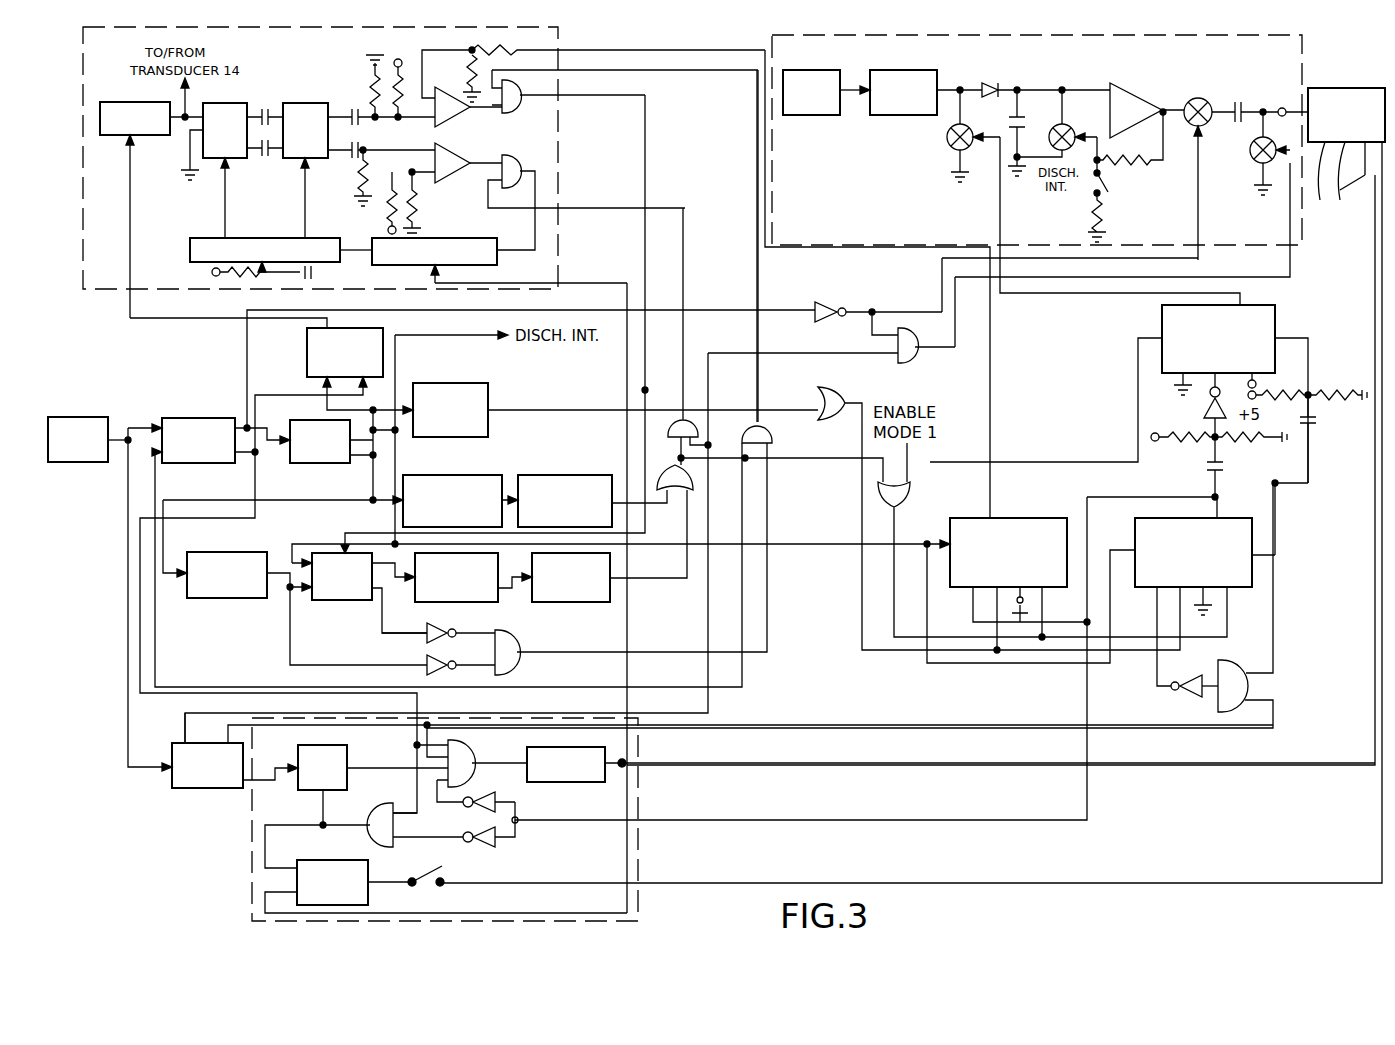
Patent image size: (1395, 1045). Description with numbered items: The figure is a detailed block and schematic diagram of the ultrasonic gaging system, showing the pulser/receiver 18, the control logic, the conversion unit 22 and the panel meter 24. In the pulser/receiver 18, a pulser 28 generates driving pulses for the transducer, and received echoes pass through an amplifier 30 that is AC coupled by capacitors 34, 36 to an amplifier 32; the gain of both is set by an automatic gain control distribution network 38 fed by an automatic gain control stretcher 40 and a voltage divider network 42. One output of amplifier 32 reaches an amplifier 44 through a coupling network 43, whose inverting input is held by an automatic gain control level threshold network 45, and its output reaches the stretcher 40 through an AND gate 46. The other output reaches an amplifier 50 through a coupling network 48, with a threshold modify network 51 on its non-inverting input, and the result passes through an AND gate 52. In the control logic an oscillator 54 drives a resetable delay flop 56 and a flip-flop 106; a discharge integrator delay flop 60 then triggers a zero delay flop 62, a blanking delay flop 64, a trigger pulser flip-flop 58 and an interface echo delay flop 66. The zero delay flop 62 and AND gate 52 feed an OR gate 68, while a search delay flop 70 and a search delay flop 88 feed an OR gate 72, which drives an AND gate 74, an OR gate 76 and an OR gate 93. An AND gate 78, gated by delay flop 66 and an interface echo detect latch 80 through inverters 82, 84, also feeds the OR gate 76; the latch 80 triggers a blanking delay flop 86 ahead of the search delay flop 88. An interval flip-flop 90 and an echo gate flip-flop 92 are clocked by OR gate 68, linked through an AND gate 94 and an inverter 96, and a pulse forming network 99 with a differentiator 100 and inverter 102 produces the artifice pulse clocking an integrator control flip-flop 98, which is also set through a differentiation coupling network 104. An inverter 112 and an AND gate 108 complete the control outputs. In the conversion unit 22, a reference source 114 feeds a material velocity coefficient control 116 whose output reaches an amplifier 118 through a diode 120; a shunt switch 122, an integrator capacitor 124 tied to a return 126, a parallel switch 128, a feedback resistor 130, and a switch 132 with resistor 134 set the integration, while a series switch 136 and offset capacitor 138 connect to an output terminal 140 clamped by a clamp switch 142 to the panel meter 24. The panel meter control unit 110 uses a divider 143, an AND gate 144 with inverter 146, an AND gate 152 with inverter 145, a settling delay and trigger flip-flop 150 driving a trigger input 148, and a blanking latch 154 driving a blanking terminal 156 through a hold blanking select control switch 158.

The pulser/receiver 18 is at (84, 208).
The conversion unit 22 is at (803, 240).
The panel meter 24 is at (1367, 85).
The pulser 28 is at (140, 100).
The amplifier 30 is at (208, 103).
The amplifier 32 is at (325, 105).
The capacitor 34 is at (268, 106).
The capacitor 36 is at (249, 158).
The automatic gain control distribution network 38 is at (277, 227).
The automatic gain control stretcher 40 is at (482, 238).
The voltage divider network 42 is at (270, 277).
The coupling network 43 is at (352, 178).
The amplifier 44 is at (465, 154).
The automatic gain control level threshold network 45 is at (428, 203).
The AND gate 46 is at (522, 165).
The coupling network 48 is at (358, 80).
The amplifier 50 is at (458, 90).
The threshold modify network 51 is at (500, 64).
The AND gate 52 is at (519, 95).
The oscillator 54 is at (88, 417).
The resetable delay flop 56 is at (206, 417).
The trigger pulser flip-flop 58 is at (305, 364).
The discharge integrator delay flop 60 is at (343, 465).
The zero delay flop 62 is at (465, 384).
The blanking delay flop 64 is at (474, 474).
The interface echo delay flop 66 is at (209, 598).
The OR gate 68 is at (836, 399).
The search delay flop 70 is at (559, 474).
The OR gate 72 is at (655, 478).
The AND gate 74 is at (668, 430).
The OR gate 76 is at (775, 440).
The AND gate 78 is at (517, 635).
The interface echo detect latch 80 is at (363, 603).
The inverter 82 is at (413, 665).
The inverter 84 is at (423, 630).
The blanking delay flop 86 is at (453, 604).
The search delay flop 88 is at (564, 604).
The interval flip-flop 90 is at (1070, 525).
The echo gate flip-flop 92 is at (1260, 553).
The OR gate 93 is at (883, 504).
The AND gate 94 is at (1218, 705).
The inverter 96 is at (1178, 683).
The integrator control flip-flop 98 is at (1162, 347).
The pulse forming network 99 is at (1120, 415).
The differentiator 100 is at (1228, 452).
The inverter 102 is at (1204, 403).
The differentiation coupling network 104 is at (1325, 425).
The flip-flop 106 is at (202, 788).
The AND gate 108 is at (918, 363).
The panel meter control unit 110 is at (250, 842).
The inverter 112 is at (826, 302).
The reference source 114 is at (796, 69).
The material velocity coefficient control 116 is at (896, 69).
The amplifier 118 is at (1135, 83).
The diode 120 is at (992, 82).
The shunt switch 122 is at (945, 142).
The integrator capacitor 124 is at (1020, 114).
The return 126 is at (1005, 177).
The switch 128 is at (1050, 107).
The feedback resistor 130 is at (1130, 160).
The switch 132 is at (1082, 200).
The resistor 134 is at (1104, 208).
The series switch 136 is at (1203, 95).
The offset capacitor 138 is at (1240, 100).
The output terminal 140 is at (1275, 108).
The clamp switch 142 is at (1253, 148).
The divider 143 is at (340, 760).
The AND gate 144 is at (456, 762).
The inverter 145 is at (466, 830).
The inverter 146 is at (487, 802).
The trigger input 148 is at (1322, 180).
The settling delay and trigger flip-flop 150 is at (560, 782).
The AND gate 152 is at (355, 825).
The blanking latch 154 is at (350, 867).
The blanking terminal 156 is at (1336, 173).
The hold blanking select control switch 158 is at (428, 887).